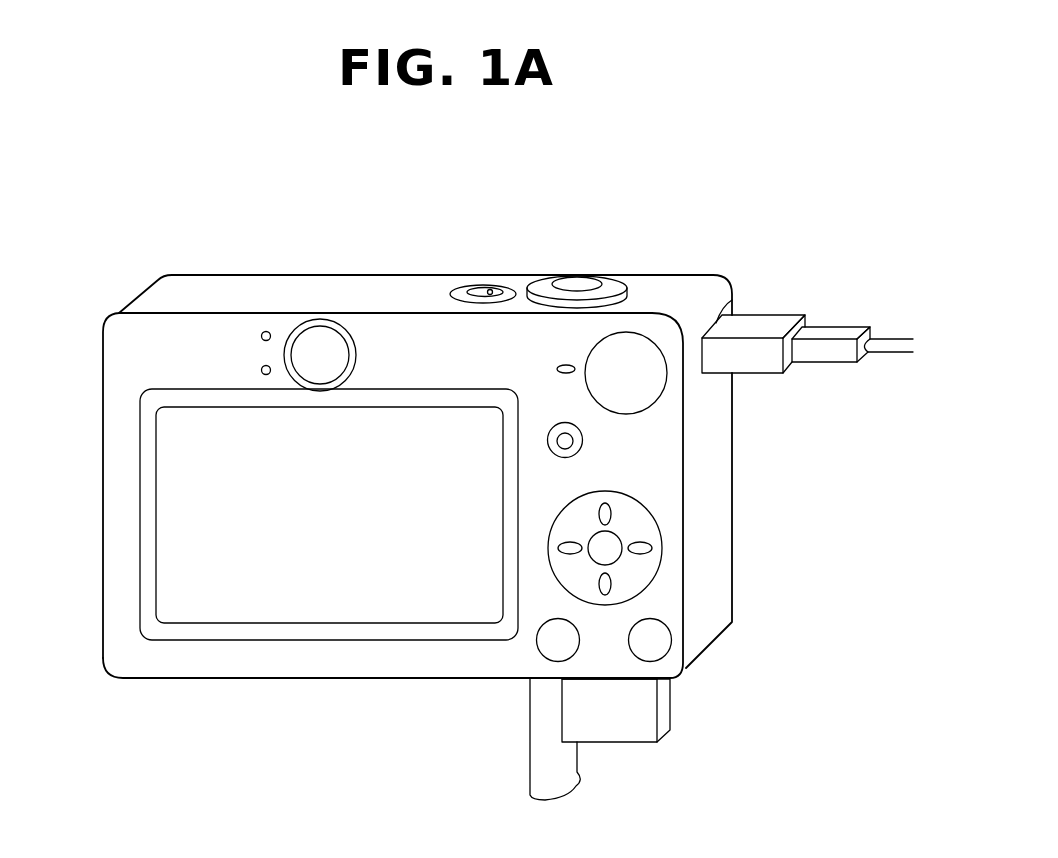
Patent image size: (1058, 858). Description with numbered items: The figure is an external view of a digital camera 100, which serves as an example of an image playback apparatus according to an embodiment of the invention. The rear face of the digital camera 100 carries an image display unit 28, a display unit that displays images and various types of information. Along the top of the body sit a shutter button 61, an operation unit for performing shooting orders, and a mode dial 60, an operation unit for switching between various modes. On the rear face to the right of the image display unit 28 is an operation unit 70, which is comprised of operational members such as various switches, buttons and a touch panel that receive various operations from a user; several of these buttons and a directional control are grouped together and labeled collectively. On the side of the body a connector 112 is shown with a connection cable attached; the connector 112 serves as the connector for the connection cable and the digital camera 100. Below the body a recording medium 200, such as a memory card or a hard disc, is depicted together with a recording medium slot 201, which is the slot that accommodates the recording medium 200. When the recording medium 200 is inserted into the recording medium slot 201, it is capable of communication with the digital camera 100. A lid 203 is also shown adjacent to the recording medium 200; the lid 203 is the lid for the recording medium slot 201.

The image display unit 28 is at (187, 494).
The mode dial 60 is at (648, 350).
The shutter button 61 is at (580, 285).
The operation unit 70 is at (503, 301).
The digital camera 100 is at (303, 680).
The connector 112 is at (733, 300).
The recording medium 200 is at (637, 720).
The recording medium slot 201 is at (600, 679).
The lid 203 is at (540, 737).